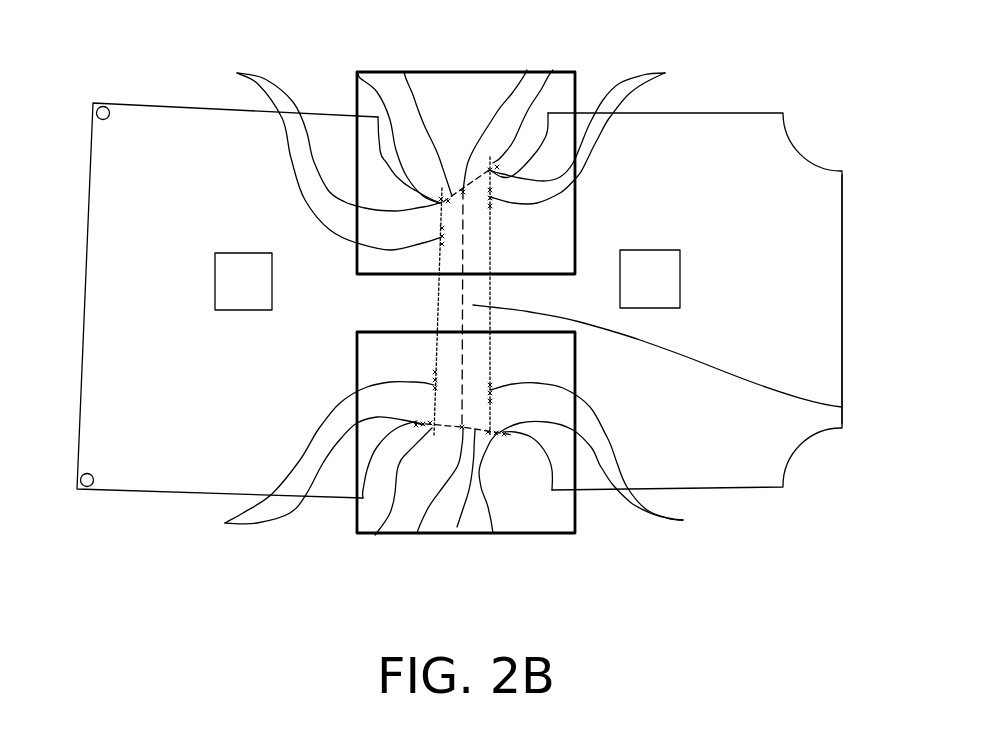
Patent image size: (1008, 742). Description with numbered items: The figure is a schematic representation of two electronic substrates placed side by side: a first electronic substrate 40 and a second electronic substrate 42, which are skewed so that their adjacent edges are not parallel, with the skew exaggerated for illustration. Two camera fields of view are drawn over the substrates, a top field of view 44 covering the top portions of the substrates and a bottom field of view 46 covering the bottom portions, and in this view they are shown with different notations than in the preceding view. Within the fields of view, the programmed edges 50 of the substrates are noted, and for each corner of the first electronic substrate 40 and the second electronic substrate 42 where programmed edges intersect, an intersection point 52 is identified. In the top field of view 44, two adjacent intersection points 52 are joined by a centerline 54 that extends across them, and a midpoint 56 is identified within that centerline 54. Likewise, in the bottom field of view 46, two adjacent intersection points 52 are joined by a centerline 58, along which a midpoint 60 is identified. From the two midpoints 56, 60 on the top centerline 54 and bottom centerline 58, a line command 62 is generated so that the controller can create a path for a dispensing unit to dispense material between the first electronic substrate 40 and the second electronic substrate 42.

The first electronic substrate 40 is at (103, 220).
The second electronic substrate 42 is at (832, 278).
The top field of view 44 is at (378, 72).
The bottom field of view 46 is at (537, 535).
The programmed edges 50 is at (455, 300).
The intersection point 52 is at (357, 74).
The centerline 54 is at (404, 72).
The midpoint 56 is at (527, 70).
The centerline 58 is at (457, 527).
The midpoint 60 is at (417, 533).
The line command 62 is at (842, 407).